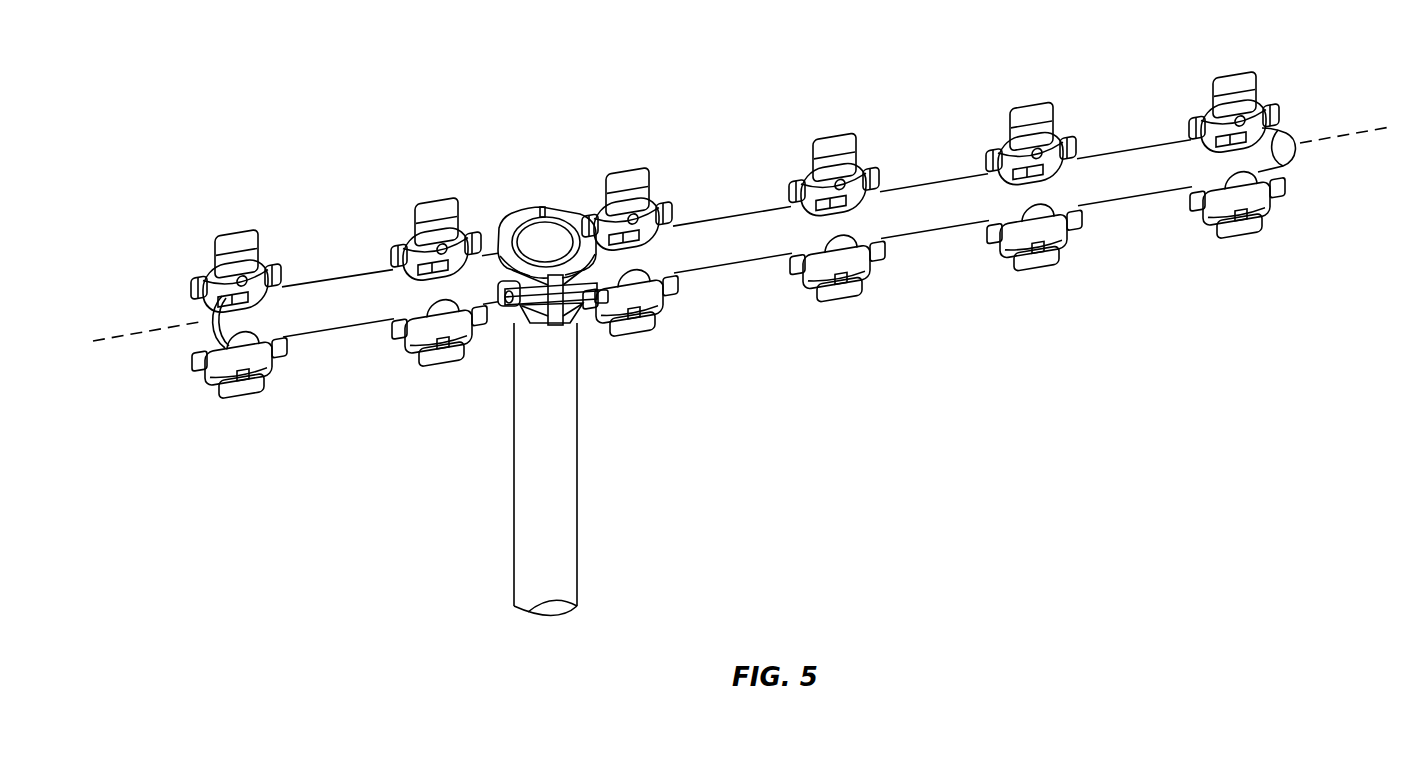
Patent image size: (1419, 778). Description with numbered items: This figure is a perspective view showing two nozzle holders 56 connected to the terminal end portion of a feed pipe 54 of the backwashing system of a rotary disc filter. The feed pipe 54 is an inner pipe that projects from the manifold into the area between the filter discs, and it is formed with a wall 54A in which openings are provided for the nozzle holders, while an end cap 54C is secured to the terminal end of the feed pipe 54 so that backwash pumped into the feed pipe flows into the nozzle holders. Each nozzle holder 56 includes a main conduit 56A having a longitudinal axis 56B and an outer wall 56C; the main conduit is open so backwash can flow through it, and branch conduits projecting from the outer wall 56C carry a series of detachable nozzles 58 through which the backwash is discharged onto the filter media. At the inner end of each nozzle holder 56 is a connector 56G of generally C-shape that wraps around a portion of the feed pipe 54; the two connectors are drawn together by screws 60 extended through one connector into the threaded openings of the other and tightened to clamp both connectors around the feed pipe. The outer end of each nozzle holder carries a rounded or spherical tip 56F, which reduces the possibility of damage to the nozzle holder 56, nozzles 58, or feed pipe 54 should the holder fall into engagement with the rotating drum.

The feed pipe 54 is at (510, 522).
The wall 54A is at (560, 553).
The end cap 54C is at (548, 232).
The nozzle holder 56 is at (364, 340).
The main conduit 56A is at (742, 245).
The longitudinal axis 56B is at (133, 332).
The outer wall 56C is at (346, 283).
The rounded or spherical tip 56F is at (1290, 158).
The connector 56G is at (515, 226).
The nozzle 58 is at (237, 246).
The screw 60 is at (510, 303).